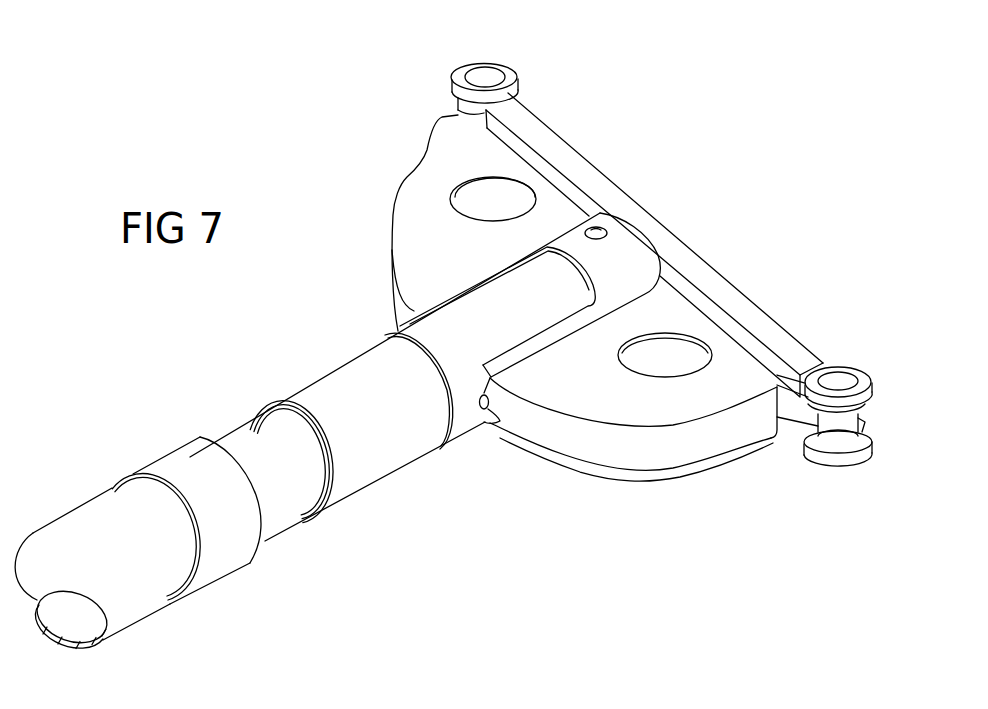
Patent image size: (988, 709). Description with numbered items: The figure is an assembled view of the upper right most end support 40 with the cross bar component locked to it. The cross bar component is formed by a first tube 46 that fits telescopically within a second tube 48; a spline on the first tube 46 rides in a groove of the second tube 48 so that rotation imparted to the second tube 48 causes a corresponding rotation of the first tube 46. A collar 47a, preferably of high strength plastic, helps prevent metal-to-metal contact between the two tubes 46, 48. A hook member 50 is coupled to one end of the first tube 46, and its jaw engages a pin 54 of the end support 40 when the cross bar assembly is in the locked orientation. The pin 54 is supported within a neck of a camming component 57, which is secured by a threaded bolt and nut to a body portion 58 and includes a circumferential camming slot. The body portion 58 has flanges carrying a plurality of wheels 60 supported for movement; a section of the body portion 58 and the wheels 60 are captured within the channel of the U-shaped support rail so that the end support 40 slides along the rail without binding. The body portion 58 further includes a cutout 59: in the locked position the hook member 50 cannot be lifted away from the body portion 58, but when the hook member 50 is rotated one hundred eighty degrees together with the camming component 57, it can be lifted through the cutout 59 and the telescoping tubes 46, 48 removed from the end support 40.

The end support 40 is at (240, 336).
The first tube 46 is at (286, 524).
The collar 47a is at (212, 571).
The second tube 48 is at (133, 611).
The hook member 50 is at (392, 471).
The pin 54 is at (494, 418).
The camming component 57 is at (402, 328).
The body portion 58 is at (462, 117).
The cutout 59 is at (429, 177).
The wheels 60 is at (457, 75).